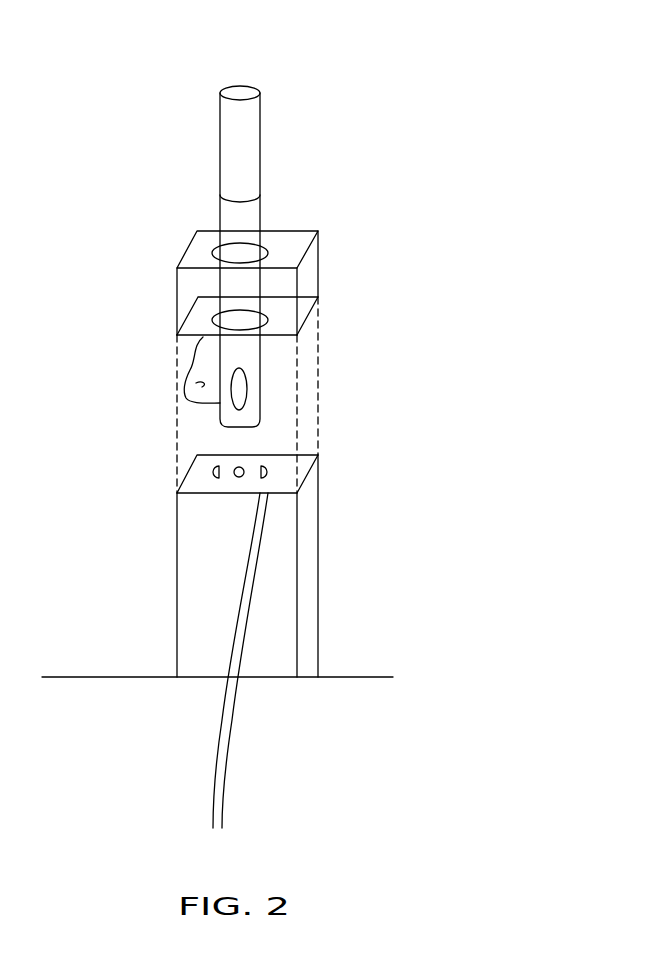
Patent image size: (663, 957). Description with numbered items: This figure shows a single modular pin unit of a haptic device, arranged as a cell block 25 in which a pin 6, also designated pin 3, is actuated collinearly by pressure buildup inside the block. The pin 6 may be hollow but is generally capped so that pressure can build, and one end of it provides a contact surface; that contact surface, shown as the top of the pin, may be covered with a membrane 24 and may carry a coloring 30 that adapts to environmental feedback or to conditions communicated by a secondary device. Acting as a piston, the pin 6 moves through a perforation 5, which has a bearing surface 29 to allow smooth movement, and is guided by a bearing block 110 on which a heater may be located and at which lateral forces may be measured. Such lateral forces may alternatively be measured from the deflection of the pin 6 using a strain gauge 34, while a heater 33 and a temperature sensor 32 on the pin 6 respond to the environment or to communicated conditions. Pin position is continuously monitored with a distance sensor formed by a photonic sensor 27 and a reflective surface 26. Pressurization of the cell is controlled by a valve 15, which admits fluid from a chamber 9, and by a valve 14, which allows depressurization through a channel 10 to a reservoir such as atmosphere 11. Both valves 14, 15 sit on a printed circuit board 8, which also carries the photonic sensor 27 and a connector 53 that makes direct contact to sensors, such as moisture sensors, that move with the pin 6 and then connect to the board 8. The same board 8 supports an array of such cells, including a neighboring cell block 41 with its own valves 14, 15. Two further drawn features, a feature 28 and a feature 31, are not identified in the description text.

The pin 3 is at (254, 101).
The pin 6 is at (250, 65).
The coloring 30 is at (220, 90).
The membrane 24 is at (256, 97).
The cell block 25 is at (405, 105).
The perforation 5 is at (292, 231).
The bearing block 110 is at (183, 297).
The bearing surface 29 is at (268, 253).
The heater 33 is at (288, 277).
The strain gauge 34 is at (318, 294).
The connecting wire 28 is at (196, 383).
The left support strut 31 is at (172, 388).
The reflective surface 26 is at (297, 400).
The valve 15 is at (195, 462).
The cell block 41 is at (205, 455).
The photonic sensor 27 is at (248, 468).
The valve 14 is at (300, 470).
The connector 53 is at (177, 493).
The temperature sensor 32 is at (240, 410).
The printed circuit board 8 is at (290, 495).
The chamber 9 is at (390, 594).
The atmosphere 11 is at (128, 708).
The channel 10 is at (238, 740).